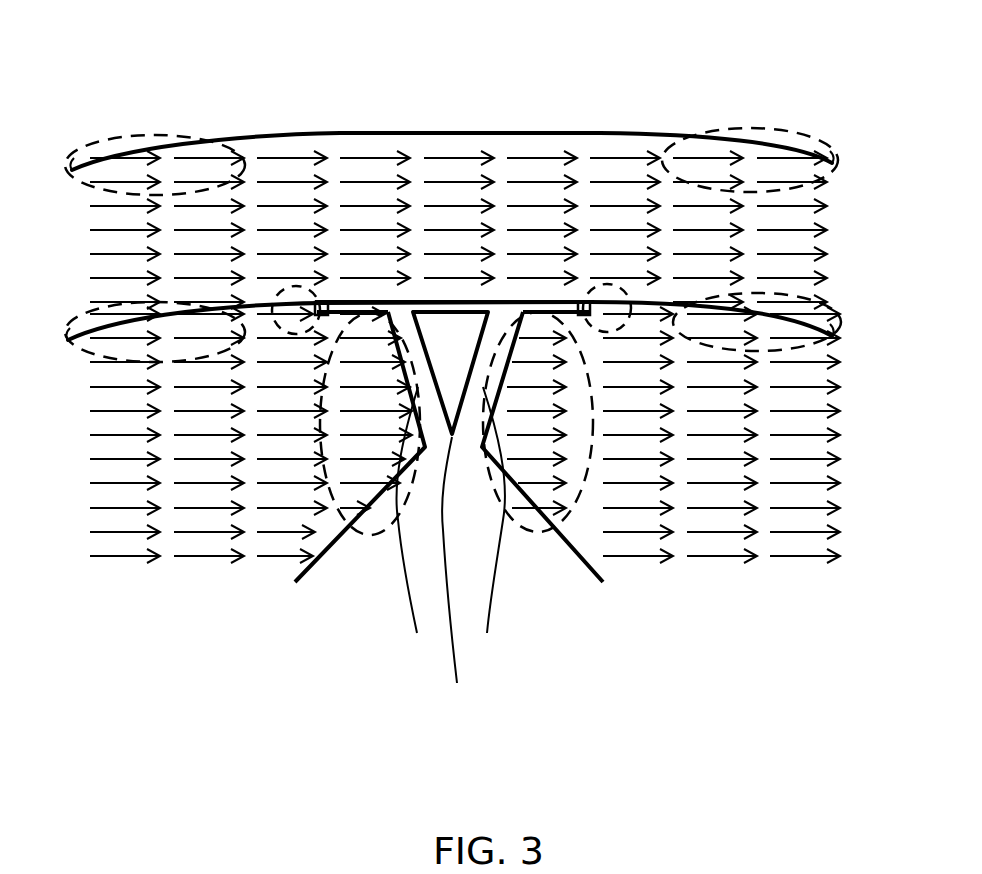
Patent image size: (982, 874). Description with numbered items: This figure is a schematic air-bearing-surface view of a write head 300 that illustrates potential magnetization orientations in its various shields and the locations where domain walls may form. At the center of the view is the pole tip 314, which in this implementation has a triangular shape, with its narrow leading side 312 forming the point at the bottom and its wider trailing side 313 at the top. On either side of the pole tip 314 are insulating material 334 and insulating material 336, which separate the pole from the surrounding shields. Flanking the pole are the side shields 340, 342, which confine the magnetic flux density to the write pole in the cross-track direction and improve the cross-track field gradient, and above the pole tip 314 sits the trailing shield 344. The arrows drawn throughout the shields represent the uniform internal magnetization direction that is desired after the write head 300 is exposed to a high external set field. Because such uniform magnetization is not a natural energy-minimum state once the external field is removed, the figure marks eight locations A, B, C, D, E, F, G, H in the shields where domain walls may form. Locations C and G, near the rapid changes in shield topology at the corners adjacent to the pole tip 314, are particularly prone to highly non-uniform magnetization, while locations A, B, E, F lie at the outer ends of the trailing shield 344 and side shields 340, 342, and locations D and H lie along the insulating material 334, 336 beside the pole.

The write head 300 is at (357, 80).
The leading side 312 is at (457, 683).
The trailing side 313 is at (460, 300).
The pole tip 314 is at (468, 343).
The insulating material 334 is at (417, 633).
The insulating material 336 is at (487, 633).
The side shield 340 is at (205, 591).
The side shield 342 is at (766, 591).
The trailing shield 344 is at (447, 179).
The location A is at (125, 137).
The location B is at (100, 303).
The location C is at (306, 298).
The location D is at (372, 528).
The location E is at (787, 132).
The location F is at (825, 305).
The location G is at (596, 297).
The location H is at (530, 528).